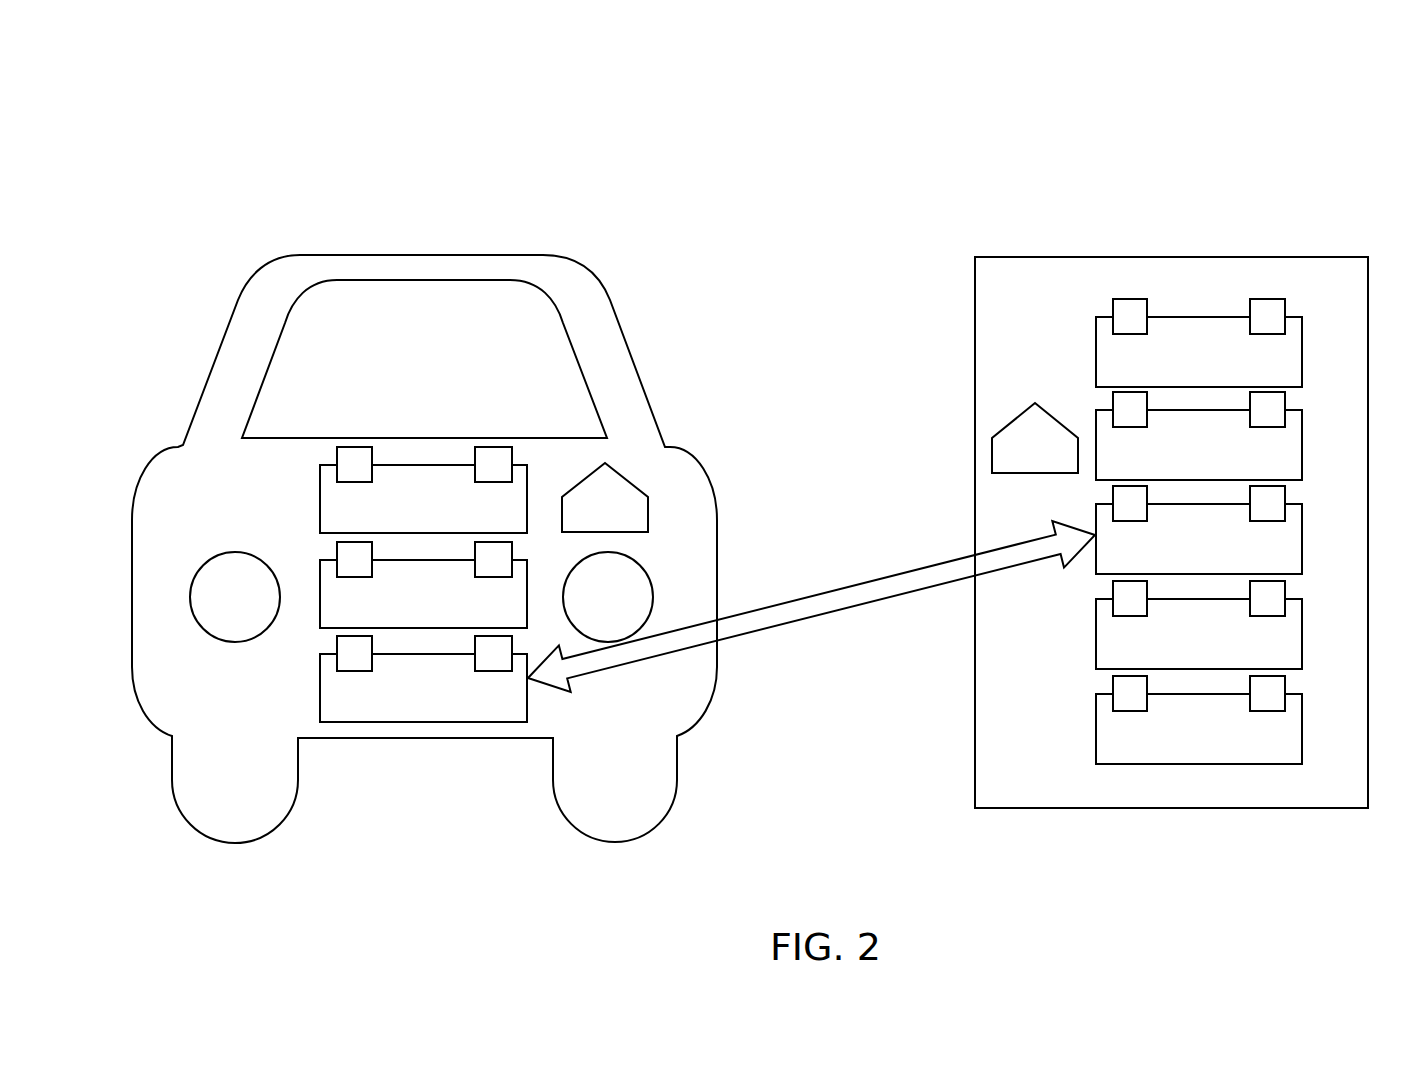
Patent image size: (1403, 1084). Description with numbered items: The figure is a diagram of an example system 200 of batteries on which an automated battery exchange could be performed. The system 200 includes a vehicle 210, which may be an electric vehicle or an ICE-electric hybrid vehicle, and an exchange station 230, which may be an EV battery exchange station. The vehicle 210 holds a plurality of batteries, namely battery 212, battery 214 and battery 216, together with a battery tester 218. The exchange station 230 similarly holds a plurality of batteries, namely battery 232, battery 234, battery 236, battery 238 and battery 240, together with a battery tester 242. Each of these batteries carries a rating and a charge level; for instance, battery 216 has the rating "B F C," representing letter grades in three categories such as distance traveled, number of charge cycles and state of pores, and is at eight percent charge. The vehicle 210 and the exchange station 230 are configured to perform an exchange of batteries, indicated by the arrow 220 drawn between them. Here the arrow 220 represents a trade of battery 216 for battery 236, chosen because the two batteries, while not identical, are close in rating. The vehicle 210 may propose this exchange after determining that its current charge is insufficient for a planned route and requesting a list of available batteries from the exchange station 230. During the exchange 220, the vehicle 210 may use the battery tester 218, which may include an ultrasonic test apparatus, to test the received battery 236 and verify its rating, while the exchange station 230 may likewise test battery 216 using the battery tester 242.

The system 200 is at (1281, 87).
The vehicle 210 is at (432, 255).
The battery 212 is at (320, 497).
The battery 214 is at (320, 560).
The battery 216 is at (320, 690).
The battery tester 218 is at (648, 516).
The arrow 220 is at (822, 602).
The exchange station 230 is at (1173, 257).
The battery 232 is at (1302, 350).
The battery 234 is at (1302, 443).
The battery 236 is at (1302, 537).
The battery 238 is at (1302, 632).
The battery 240 is at (1302, 727).
The battery tester 242 is at (990, 456).